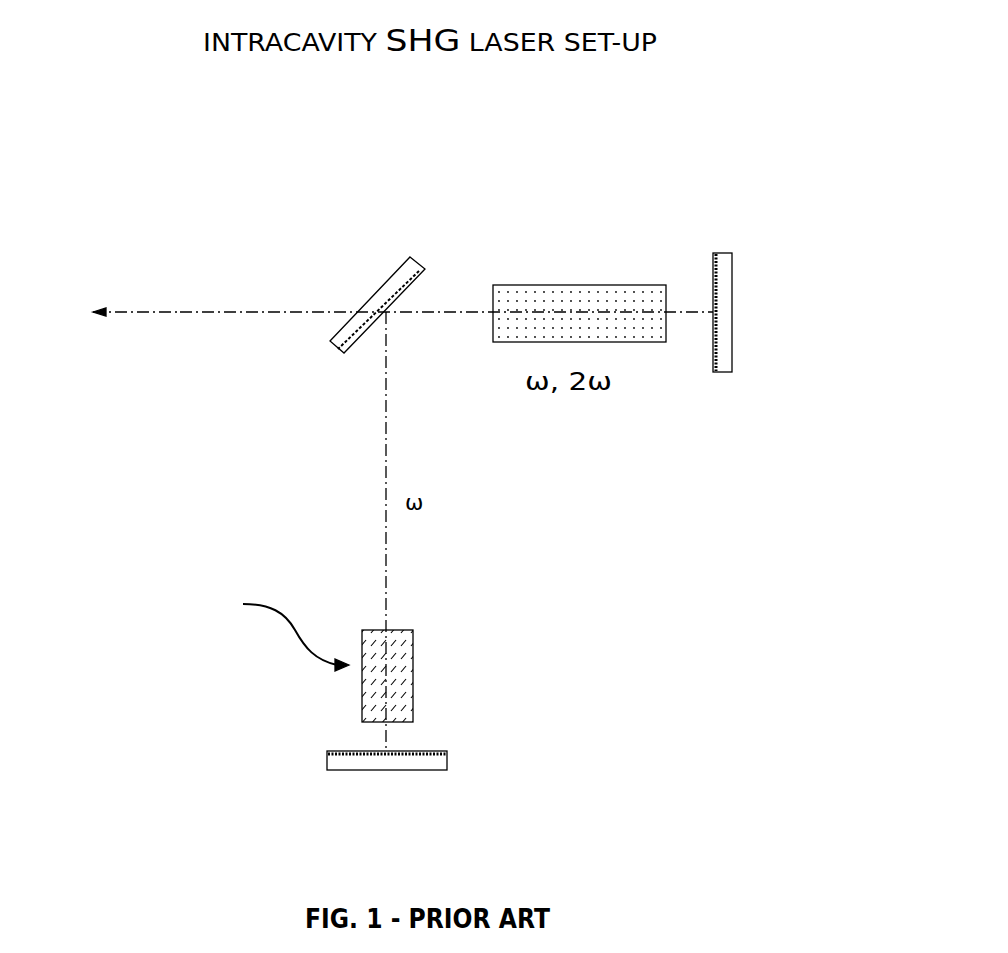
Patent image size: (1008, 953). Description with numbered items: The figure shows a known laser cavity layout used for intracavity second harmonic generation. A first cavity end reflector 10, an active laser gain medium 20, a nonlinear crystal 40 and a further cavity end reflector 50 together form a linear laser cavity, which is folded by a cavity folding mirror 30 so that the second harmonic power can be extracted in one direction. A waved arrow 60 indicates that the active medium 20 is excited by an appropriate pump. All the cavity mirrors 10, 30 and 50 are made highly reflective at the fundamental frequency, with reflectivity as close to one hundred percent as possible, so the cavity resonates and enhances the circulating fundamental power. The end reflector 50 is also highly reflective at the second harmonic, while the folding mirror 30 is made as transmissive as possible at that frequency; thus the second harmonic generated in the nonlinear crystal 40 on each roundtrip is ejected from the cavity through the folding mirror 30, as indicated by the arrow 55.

The first cavity end reflector 10 is at (340, 720).
The active (laser gain) medium 20 is at (456, 662).
The cavity folding mirror 30 is at (329, 268).
The nonlinear crystal 40 is at (574, 263).
The cavity end reflector 50 is at (779, 321).
The arrow 55 is at (130, 317).
The waved arrow 60 is at (253, 584).